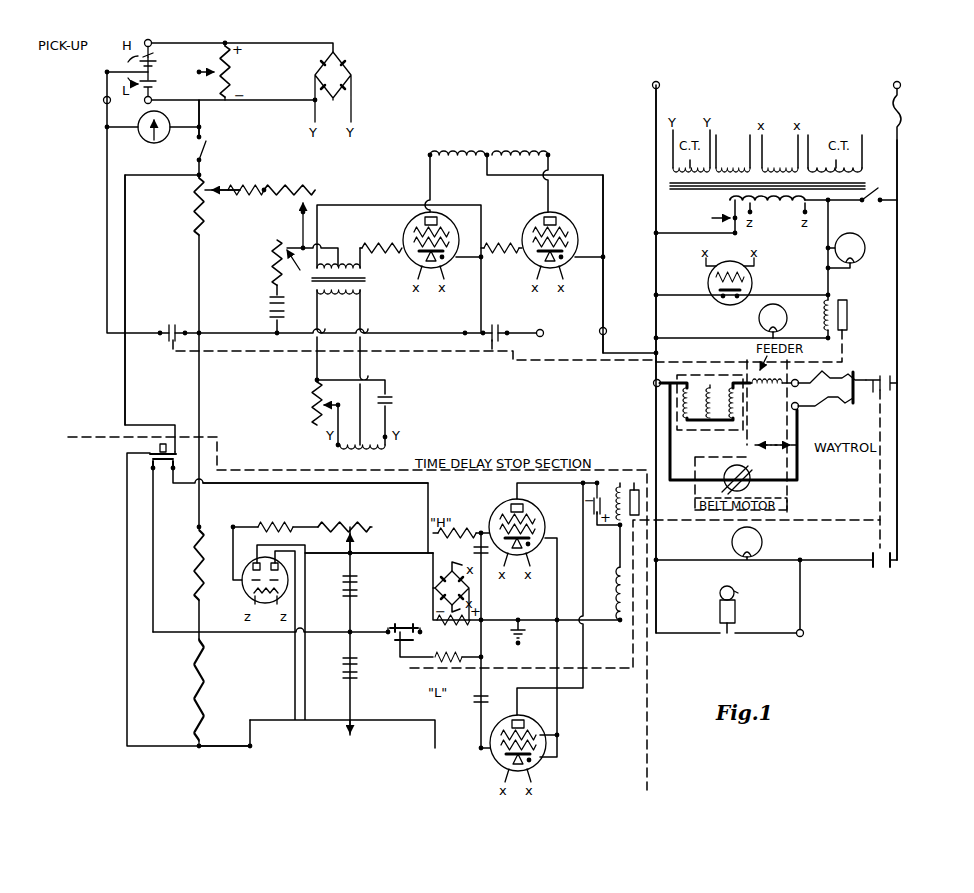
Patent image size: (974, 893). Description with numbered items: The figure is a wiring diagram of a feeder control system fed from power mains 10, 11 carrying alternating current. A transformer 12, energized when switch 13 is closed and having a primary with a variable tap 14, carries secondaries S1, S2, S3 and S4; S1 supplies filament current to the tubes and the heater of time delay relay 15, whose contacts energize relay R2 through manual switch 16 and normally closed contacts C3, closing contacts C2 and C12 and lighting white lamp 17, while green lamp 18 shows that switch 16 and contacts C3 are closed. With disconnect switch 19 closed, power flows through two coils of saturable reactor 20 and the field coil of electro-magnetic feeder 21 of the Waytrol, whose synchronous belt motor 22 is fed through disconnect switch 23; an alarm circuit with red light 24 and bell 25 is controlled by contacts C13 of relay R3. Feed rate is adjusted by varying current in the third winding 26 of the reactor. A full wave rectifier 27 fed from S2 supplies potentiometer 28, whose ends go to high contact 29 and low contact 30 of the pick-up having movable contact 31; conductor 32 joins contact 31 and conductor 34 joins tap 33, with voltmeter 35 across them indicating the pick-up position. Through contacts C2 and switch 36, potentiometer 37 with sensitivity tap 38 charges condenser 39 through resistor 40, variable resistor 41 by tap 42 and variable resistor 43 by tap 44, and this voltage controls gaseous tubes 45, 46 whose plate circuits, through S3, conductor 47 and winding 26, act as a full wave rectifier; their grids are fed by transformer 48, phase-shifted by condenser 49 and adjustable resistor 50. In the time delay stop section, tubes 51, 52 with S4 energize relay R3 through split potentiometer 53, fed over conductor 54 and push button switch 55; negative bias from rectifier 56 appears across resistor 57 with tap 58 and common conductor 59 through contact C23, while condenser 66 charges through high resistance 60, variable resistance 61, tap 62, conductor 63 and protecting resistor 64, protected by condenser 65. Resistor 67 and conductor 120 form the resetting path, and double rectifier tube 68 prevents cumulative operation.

The power main 10 is at (653, 116).
The power main 11 is at (900, 148).
The transformer 12 is at (668, 197).
The switch 13 is at (876, 206).
The variable tap 14 is at (708, 221).
The time delay relay 15 is at (718, 300).
The manual switch 16 is at (855, 374).
The white signal lamp 17 is at (865, 248).
The green signal lamp 18 is at (758, 322).
The disconnect switch 19 is at (815, 378).
The saturable reactor 20 is at (705, 440).
The electro-magnetic feeder 21 is at (768, 390).
The synchronous belt driving motor 22 is at (727, 481).
The disconnect switch 23 is at (820, 407).
The red signal light 24 is at (762, 540).
The bell 25 is at (736, 612).
The third winding 26 is at (714, 388).
The full wave rectifier 27 is at (336, 61).
The potentiometer 28 is at (228, 76).
The high contact 29 is at (152, 58).
The low contact 30 is at (152, 85).
The movable double contact 31 is at (152, 71).
The conductor 32 is at (107, 127).
The variable tap 33 is at (217, 70).
The conductor 34 is at (205, 118).
The voltmeter 35 is at (143, 138).
The switch 36 is at (208, 143).
The potentiometer 37 is at (205, 200).
The variable tap 38 is at (213, 187).
The controlling condenser 39 is at (270, 313).
The resistor 40 is at (248, 189).
The variable resistor 41 is at (292, 189).
The variable tap 42 is at (300, 208).
The variable resistor 43 is at (272, 260).
The variable tap 44 is at (294, 271).
The electronic tube 45 is at (437, 222).
The electronic tube 46 is at (555, 222).
The conductor 47 is at (606, 256).
The transformer 48 is at (368, 280).
The phase shift condenser 49 is at (394, 400).
The adjustable resistor 50 is at (312, 388).
The electric tube 51 is at (502, 507).
The electric tube 52 is at (545, 753).
The split potentiometer 53 is at (158, 670).
The conductor 54 is at (124, 376).
The push button switch 55 is at (150, 458).
The full wave rectifier 56 is at (466, 590).
The resistor 57 is at (456, 626).
The variable tap 58 is at (402, 628).
The common conductor 59 is at (318, 630).
The high resistance 60 is at (285, 526).
The variable resistance 61 is at (357, 526).
The variable tap 62 is at (356, 541).
The conductor 63 is at (380, 556).
The protecting resistor 64 is at (450, 532).
The protecting condenser 65 is at (474, 551).
The condenser 66 is at (360, 595).
The resistor 67 is at (448, 660).
The double full wave rectifier tube 68 is at (246, 600).
The conductor 120 is at (232, 484).
The secondary winding S1 is at (785, 165).
The secondary winding S2 is at (686, 112).
The secondary winding S3 is at (497, 148).
The secondary winding S4 is at (731, 165).
The relay contacts C2 is at (172, 327).
The relay contact C12 is at (495, 326).
The normally closed contacts C3 is at (882, 380).
The normally open contacts C13 is at (885, 551).
The normally closed contact C23 is at (399, 651).
The relay R2 is at (848, 315).
The relay R3 is at (616, 496).